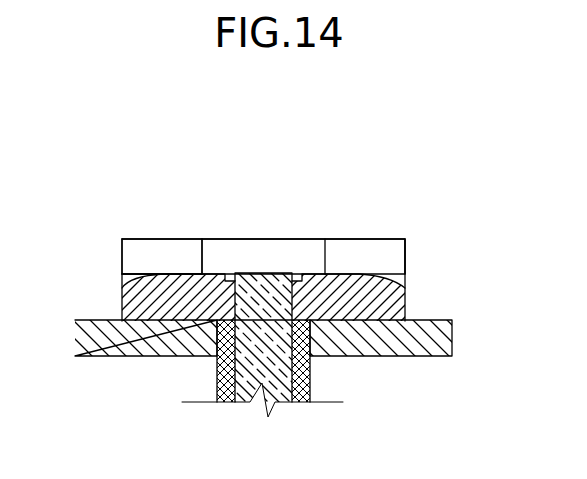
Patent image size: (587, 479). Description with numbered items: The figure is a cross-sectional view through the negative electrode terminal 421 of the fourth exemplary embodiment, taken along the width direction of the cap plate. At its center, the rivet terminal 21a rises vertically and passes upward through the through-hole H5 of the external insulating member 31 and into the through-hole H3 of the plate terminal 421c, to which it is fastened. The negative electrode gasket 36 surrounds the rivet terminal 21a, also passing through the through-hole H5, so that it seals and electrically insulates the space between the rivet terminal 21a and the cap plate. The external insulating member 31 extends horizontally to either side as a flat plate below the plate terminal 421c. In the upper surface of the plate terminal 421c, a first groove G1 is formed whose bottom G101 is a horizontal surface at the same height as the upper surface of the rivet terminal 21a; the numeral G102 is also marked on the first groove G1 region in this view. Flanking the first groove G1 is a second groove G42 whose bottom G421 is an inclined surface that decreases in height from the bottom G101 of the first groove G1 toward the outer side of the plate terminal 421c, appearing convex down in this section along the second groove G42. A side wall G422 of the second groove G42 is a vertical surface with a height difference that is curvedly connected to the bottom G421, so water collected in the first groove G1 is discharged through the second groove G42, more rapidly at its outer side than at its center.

The negative electrode terminal 421 is at (218, 195).
The second groove G42 is at (163, 177).
The bottom of the second groove G421 is at (143, 279).
The side wall of the second groove G422 is at (155, 253).
The first groove G1 is at (372, 169).
The bottom of the first groove G101 is at (297, 296).
The second gap G102 is at (318, 256).
The plate terminal 421c is at (138, 301).
The through-hole H3 is at (370, 300).
The external insulating member 31 is at (85, 339).
The negative electrode gasket 36 is at (222, 374).
The through-hole H5 is at (312, 362).
The rivet terminal 21a is at (256, 378).